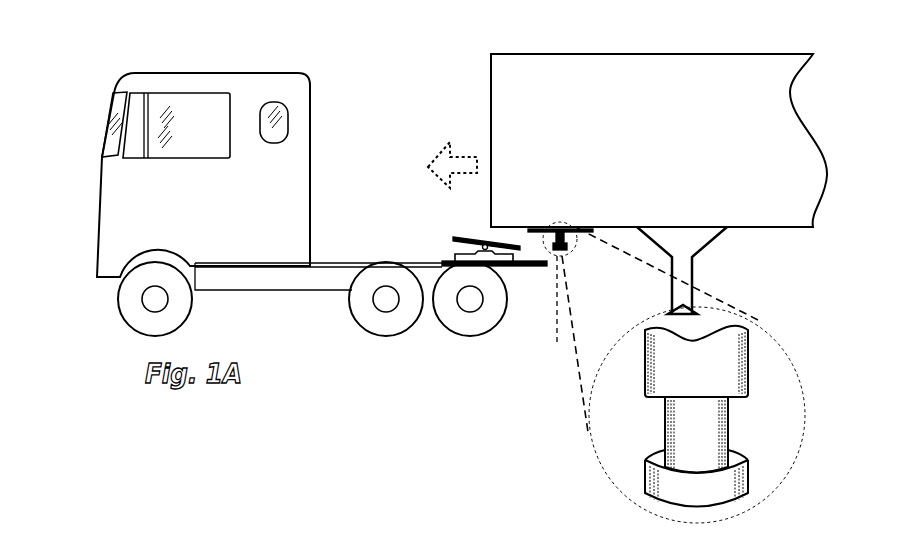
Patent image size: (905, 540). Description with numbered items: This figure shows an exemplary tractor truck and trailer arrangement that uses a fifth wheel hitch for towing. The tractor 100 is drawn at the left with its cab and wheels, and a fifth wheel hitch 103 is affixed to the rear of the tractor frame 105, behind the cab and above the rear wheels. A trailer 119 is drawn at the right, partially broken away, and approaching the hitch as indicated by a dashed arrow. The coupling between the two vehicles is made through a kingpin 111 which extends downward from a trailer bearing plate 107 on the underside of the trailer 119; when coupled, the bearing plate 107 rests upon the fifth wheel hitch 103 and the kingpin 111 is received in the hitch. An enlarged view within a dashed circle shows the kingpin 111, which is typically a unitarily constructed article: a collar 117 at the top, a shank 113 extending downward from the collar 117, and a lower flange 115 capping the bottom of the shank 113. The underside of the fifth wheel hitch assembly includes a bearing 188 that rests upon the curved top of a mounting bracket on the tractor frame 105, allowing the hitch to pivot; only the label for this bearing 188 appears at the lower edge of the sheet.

The tractor 100 is at (323, 86).
The fifth wheel hitch 103 is at (473, 237).
The tractor frame 105 is at (405, 262).
The trailer bearing plate 107 is at (595, 227).
The kingpin 111 is at (557, 343).
The shank 113 is at (682, 443).
The lower flange 115 is at (667, 493).
The collar 117 is at (700, 362).
The trailer 119 is at (498, 118).
The bearing 188 is at (285, 537).